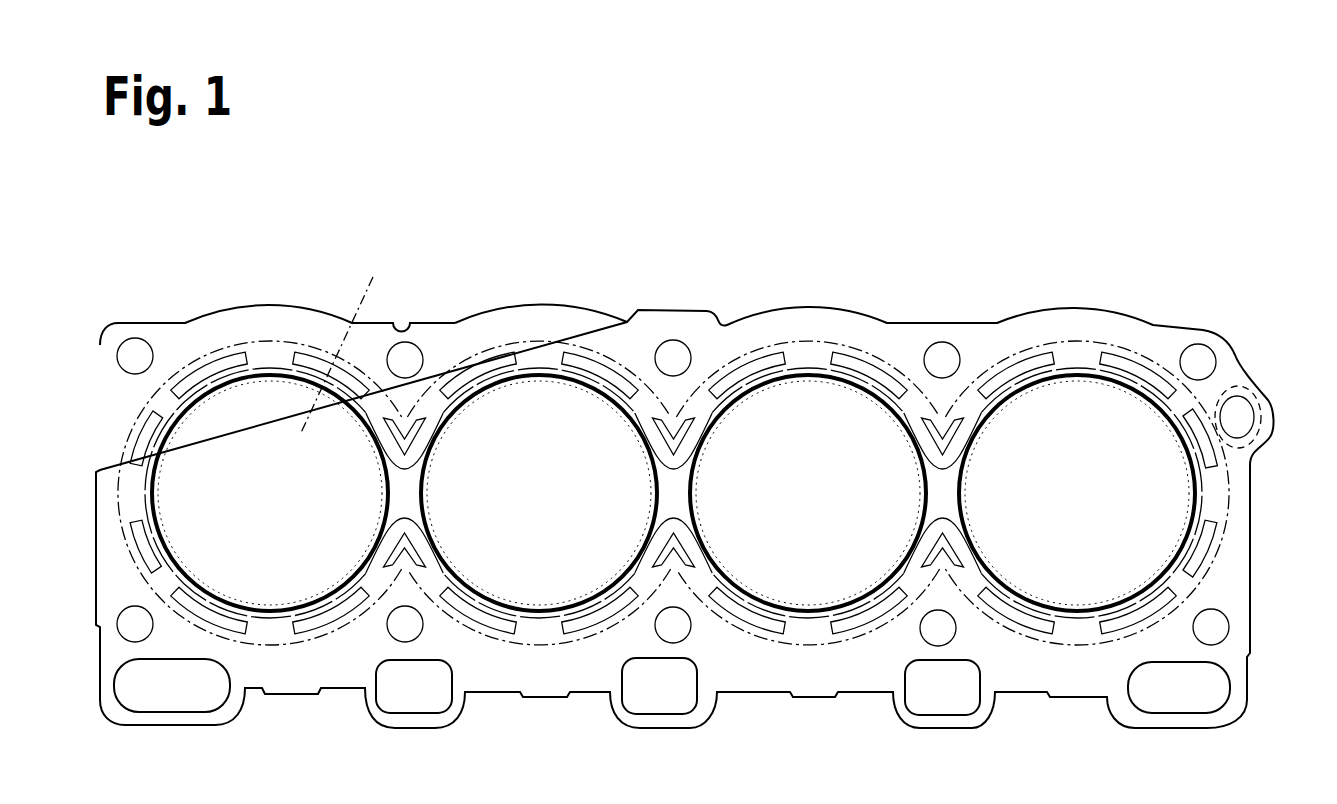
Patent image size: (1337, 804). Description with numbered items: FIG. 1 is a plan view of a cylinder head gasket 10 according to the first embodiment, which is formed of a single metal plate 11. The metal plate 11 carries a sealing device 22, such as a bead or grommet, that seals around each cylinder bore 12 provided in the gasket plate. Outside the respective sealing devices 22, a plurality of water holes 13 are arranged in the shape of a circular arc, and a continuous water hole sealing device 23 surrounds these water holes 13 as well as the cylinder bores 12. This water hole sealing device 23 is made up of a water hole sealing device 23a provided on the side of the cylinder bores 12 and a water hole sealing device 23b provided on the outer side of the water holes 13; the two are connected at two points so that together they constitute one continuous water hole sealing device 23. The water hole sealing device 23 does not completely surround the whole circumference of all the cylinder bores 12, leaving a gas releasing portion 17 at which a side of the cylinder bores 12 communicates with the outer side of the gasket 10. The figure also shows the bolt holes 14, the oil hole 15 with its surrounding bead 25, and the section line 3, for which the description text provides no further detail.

The section line 3- 3 is at (373, 277).
The cylinder head gasket 10 is at (697, 300).
The metal plate 11 is at (543, 317).
The cylinder bore 12 is at (812, 415).
The water hole 13 is at (657, 398).
The bolt hole 14 is at (1203, 362).
The oil hole 15 is at (1248, 428).
The gas releasing portion 17 is at (128, 495).
The sealing device 22 is at (860, 620).
The water hole sealing device 23 is at (530, 643).
The water hole sealing device 23a is at (722, 563).
The water hole sealing device 23b is at (737, 640).
The bead around oil hole 25 is at (1264, 398).